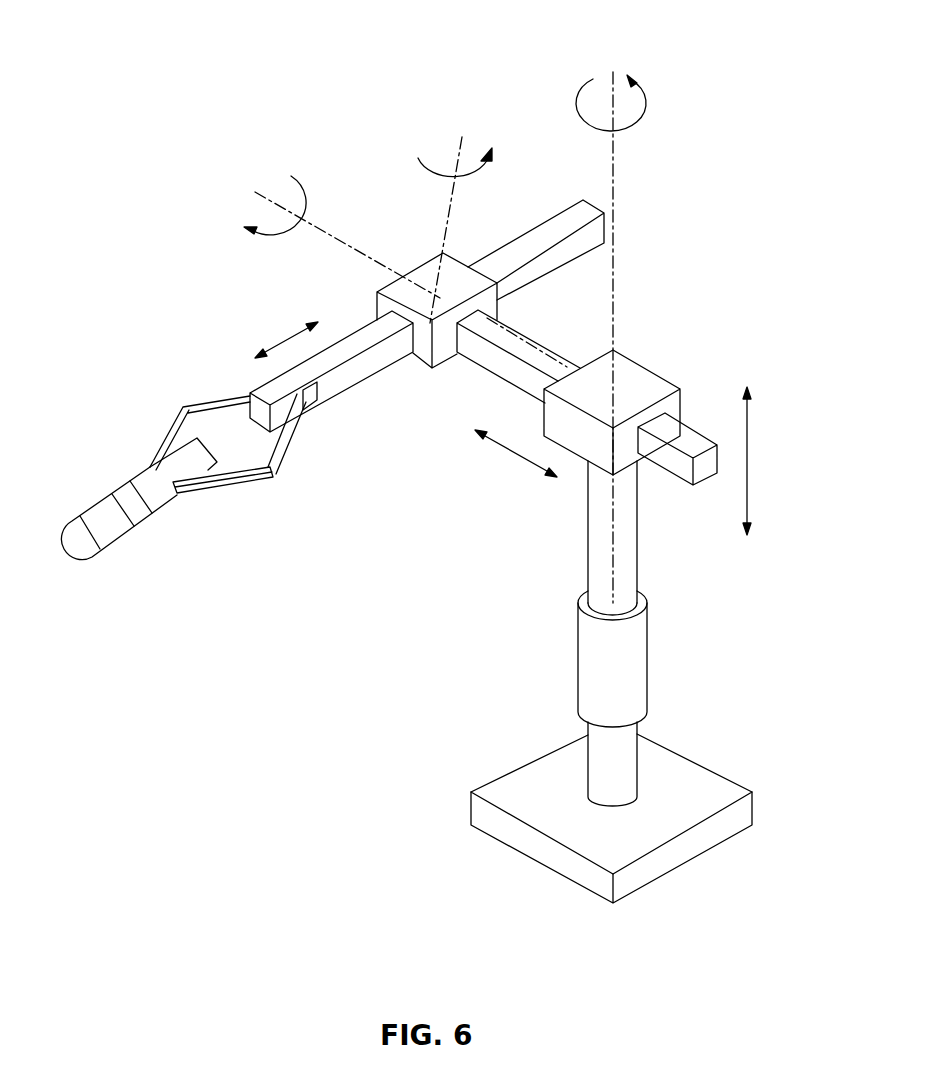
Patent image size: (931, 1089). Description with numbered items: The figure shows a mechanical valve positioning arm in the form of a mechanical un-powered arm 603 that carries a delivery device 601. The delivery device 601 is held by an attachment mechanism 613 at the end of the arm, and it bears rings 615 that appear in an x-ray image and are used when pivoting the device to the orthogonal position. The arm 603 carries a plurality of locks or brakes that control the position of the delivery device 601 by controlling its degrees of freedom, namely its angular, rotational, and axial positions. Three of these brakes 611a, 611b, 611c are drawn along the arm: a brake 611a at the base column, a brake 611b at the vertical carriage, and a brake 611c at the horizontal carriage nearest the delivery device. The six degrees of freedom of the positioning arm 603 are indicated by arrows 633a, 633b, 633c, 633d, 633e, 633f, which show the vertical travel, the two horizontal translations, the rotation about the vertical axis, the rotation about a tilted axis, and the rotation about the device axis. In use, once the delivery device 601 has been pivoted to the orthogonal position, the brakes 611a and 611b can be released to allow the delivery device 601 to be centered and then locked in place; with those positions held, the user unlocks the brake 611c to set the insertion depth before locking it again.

The mechanical un-powered arm 603 is at (152, 54).
The delivery device 601 is at (97, 518).
The attachment mechanism 613 is at (272, 477).
The rings 615 is at (128, 514).
The brake 611a is at (632, 655).
The brake 611b is at (642, 375).
The brake 611c is at (415, 277).
The arrow 633a is at (748, 437).
The arrow 633b is at (512, 452).
The arrow 633c is at (278, 345).
The arrow 633d is at (577, 113).
The arrow 633e is at (418, 157).
The arrow 633f is at (270, 232).